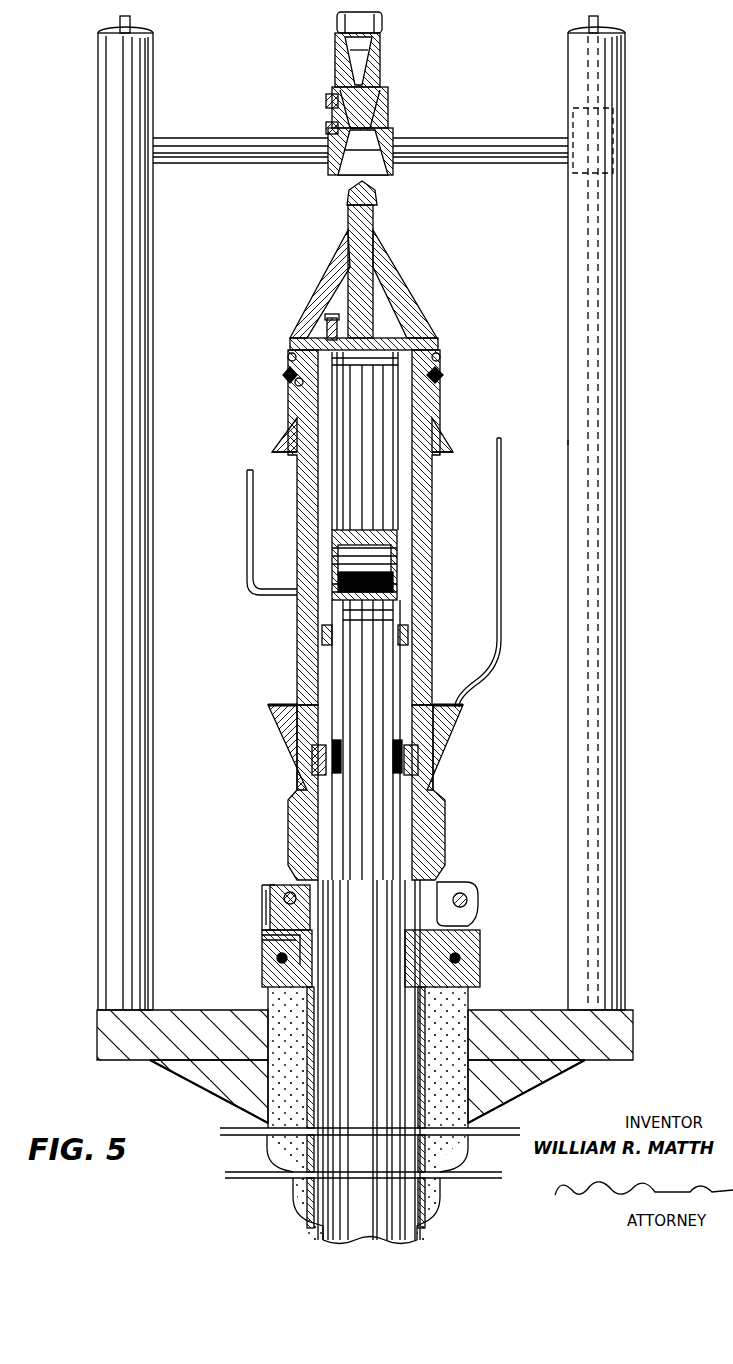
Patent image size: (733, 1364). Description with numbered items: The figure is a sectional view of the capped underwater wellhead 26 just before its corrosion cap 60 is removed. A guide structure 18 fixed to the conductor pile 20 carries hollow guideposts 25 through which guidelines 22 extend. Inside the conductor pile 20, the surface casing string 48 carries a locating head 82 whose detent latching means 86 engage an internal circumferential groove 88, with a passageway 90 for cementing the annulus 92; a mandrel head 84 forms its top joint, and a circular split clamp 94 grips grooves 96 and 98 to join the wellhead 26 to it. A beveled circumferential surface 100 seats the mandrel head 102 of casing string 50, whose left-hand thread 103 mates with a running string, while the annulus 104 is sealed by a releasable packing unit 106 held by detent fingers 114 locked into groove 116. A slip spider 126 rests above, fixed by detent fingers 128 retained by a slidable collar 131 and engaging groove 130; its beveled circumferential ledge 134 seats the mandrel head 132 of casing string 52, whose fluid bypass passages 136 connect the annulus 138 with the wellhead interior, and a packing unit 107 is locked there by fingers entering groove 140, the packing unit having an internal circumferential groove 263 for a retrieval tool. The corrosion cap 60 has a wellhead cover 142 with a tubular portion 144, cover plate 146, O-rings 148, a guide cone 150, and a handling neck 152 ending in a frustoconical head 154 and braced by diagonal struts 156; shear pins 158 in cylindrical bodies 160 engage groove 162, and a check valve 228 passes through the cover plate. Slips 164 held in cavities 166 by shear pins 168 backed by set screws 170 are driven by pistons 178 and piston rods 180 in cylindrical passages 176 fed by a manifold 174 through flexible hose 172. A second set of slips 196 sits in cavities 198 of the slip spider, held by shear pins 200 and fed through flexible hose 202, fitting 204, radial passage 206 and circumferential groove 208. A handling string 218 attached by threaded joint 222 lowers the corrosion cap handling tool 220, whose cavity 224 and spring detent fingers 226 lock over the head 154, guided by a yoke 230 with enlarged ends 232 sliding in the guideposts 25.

The guide structure 18 is at (630, 444).
The conductor pile 20 is at (359, 1054).
The guidelines 22 is at (131, 26).
The guideposts 25 is at (98, 352).
The underwater wellhead 26 is at (310, 487).
The surface casing string 48 is at (452, 1148).
The casing string 50 is at (418, 1210).
The casing string 52 is at (405, 1240).
The corrosion cap 60 is at (370, 265).
The locating head 82 is at (462, 930).
The mandrel head 84 is at (467, 896).
The detent latching means 86 is at (470, 952).
The internal circumferential groove 88 is at (262, 960).
The passageway 90 is at (262, 935).
The annulus 92 is at (280, 1002).
The circular split clamp 94 is at (445, 880).
The groove 96 is at (290, 872).
The groove 98 is at (262, 895).
The beveled circumferential surface 100 is at (305, 780).
The mandrel head 102 is at (420, 770).
The left-hand thread 103 is at (345, 560).
The annulus 104 is at (422, 1065).
The releasable packing unit 106 is at (325, 685).
The packing unit 107 is at (326, 560).
The detent fingers 114 is at (322, 545).
The circumferential groove 116 is at (290, 735).
The slip spider 126 is at (420, 495).
The detent fingers 128 is at (290, 400).
The circumferential internal groove 130 is at (440, 398).
The slidable collar 131 is at (446, 360).
The mandrel head 132 is at (405, 600).
The beveled circumferential ledge 134 is at (400, 620).
The fluid bypass passages 136 is at (322, 615).
The annulus 138 is at (430, 795).
The circumferential groove 140 is at (400, 550).
The wellhead cover 142 is at (394, 341).
The tubular portion 144 is at (440, 352).
The cover plate 146 is at (414, 318).
The O-rings 148 is at (446, 420).
The guide cone 150 is at (438, 452).
The handling neck 152 is at (373, 222).
The frustoconical head 154 is at (375, 190).
The diagonal struts 156 is at (336, 258).
The shear pins 158 is at (290, 356).
The cylindrical body 160 is at (285, 370).
The circumferential groove 162 is at (295, 382).
The slips 164 is at (305, 805).
The cavities 166 is at (305, 830).
The shear pins 168 is at (295, 830).
The set screw 170 is at (290, 818).
The flexible hose 172 is at (503, 568).
The manifold 174 is at (268, 706).
The cylindrical passages 176 is at (300, 765).
The piston 178 is at (295, 750).
The piston rod 180 is at (308, 795).
The slips 196 is at (408, 640).
The cavities 198 is at (322, 640).
The shear pins 200 is at (326, 655).
The flexible hose 202 is at (247, 500).
The fitting 204 is at (262, 590).
The radial passage 206 is at (320, 600).
The circumferential groove 208 is at (326, 580).
The handling string 218 is at (382, 22).
The corrosion cap handling tool 220 is at (369, 92).
The threaded joint 222 is at (372, 50).
The cavity 224 is at (393, 140).
The spring detent fingers 226 is at (338, 128).
The check valve 228 is at (327, 318).
The yoke 230 is at (485, 140).
The enlarged ends 232 is at (613, 106).
The internal circumferential groove 263 is at (400, 532).